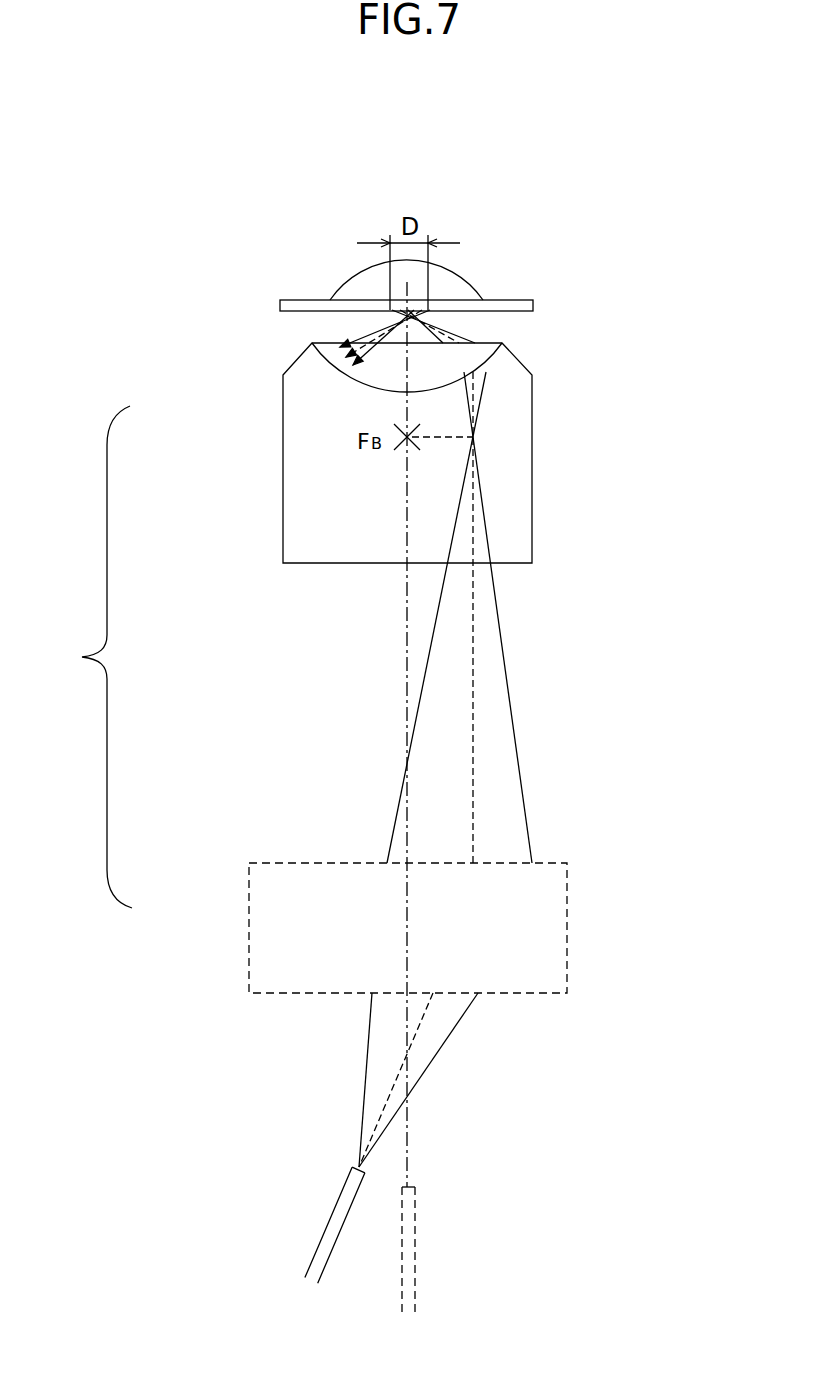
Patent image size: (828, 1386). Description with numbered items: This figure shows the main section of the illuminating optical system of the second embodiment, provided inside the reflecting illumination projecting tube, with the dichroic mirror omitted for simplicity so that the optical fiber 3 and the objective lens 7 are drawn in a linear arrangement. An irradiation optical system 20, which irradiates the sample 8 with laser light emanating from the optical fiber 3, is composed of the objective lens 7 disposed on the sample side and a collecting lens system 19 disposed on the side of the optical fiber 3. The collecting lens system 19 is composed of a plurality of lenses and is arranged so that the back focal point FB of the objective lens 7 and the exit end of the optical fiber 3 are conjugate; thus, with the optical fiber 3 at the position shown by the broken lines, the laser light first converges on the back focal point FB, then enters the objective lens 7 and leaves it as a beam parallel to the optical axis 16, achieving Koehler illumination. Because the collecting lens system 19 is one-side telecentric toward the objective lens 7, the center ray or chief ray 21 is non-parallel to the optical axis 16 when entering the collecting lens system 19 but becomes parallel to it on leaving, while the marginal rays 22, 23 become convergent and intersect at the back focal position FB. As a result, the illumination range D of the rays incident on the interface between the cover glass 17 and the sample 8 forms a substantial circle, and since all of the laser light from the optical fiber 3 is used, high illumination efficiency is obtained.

The optical fiber 3 is at (327, 1243).
The objective lens 7 is at (288, 408).
The sample 8 is at (372, 278).
The optical axis 16 is at (405, 655).
The cover glass 17 is at (283, 311).
The collecting lens system 19 is at (275, 907).
The irradiation optical system 20 is at (82, 657).
The center ray (chief ray) 21 is at (474, 702).
The marginal ray 22 is at (415, 700).
The marginal ray 23 is at (522, 780).